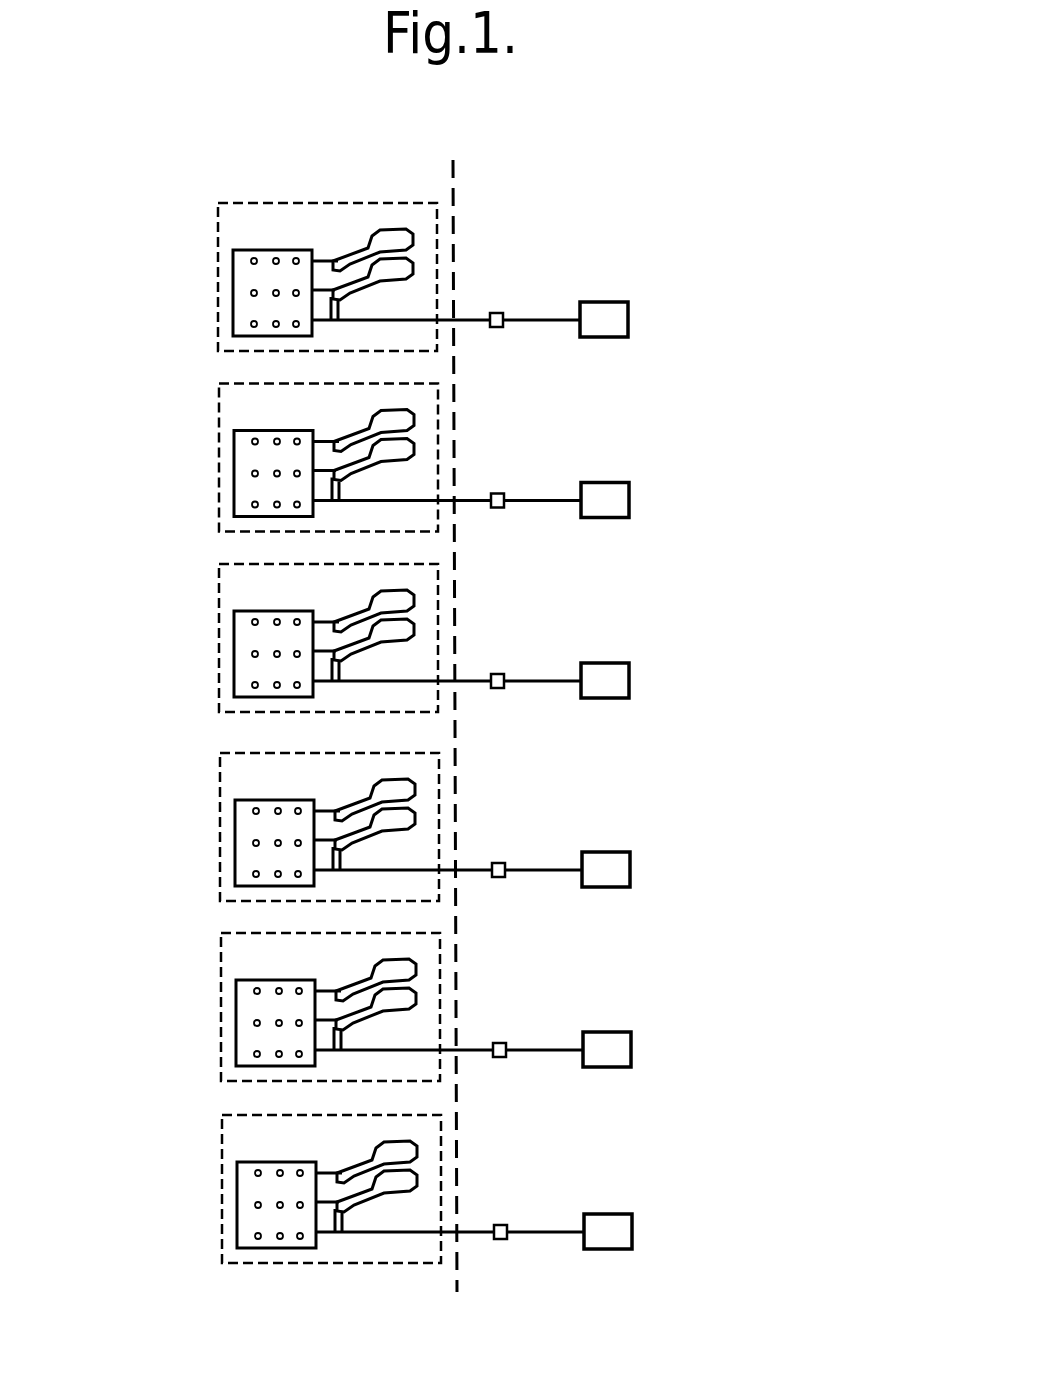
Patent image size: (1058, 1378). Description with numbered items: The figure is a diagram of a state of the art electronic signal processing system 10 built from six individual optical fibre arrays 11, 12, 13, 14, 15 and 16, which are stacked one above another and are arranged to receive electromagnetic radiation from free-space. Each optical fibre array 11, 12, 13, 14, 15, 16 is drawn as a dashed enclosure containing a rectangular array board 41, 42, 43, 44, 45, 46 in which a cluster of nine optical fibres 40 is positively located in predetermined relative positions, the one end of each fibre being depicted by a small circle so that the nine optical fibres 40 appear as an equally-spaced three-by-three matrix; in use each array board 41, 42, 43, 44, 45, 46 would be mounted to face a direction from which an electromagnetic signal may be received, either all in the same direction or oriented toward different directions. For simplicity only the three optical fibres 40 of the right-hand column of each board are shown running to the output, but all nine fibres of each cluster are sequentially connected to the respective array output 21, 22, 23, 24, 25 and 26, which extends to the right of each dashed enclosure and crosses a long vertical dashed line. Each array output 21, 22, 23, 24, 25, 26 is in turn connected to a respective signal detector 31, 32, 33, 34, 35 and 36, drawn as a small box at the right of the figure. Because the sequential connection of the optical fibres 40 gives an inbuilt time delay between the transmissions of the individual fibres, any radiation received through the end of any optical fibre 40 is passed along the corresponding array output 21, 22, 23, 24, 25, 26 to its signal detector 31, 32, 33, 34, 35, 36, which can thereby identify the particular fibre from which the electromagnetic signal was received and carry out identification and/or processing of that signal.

The electronic signal processing system 10 is at (728, 335).
The optical fibre array 11 is at (280, 277).
The optical fibre array 12 is at (276, 458).
The optical fibre array 13 is at (276, 638).
The optical fibre array 14 is at (278, 827).
The optical fibre array 15 is at (279, 1007).
The optical fibre array 16 is at (280, 1189).
The array output 21 is at (468, 320).
The array output 22 is at (447, 460).
The array output 23 is at (447, 640).
The array output 24 is at (448, 829).
The array output 25 is at (449, 1009).
The array output 26 is at (450, 1191).
The signal detector 31 is at (607, 302).
The signal detector 32 is at (615, 455).
The signal detector 33 is at (615, 635).
The signal detector 34 is at (616, 824).
The signal detector 35 is at (617, 1004).
The signal detector 36 is at (618, 1186).
The optical fibres 40 is at (296, 258).
The array board 41 is at (233, 292).
The array board 42 is at (222, 474).
The array board 43 is at (222, 654).
The array board 44 is at (237, 844).
The array board 45 is at (224, 1023).
The array board 46 is at (225, 1205).